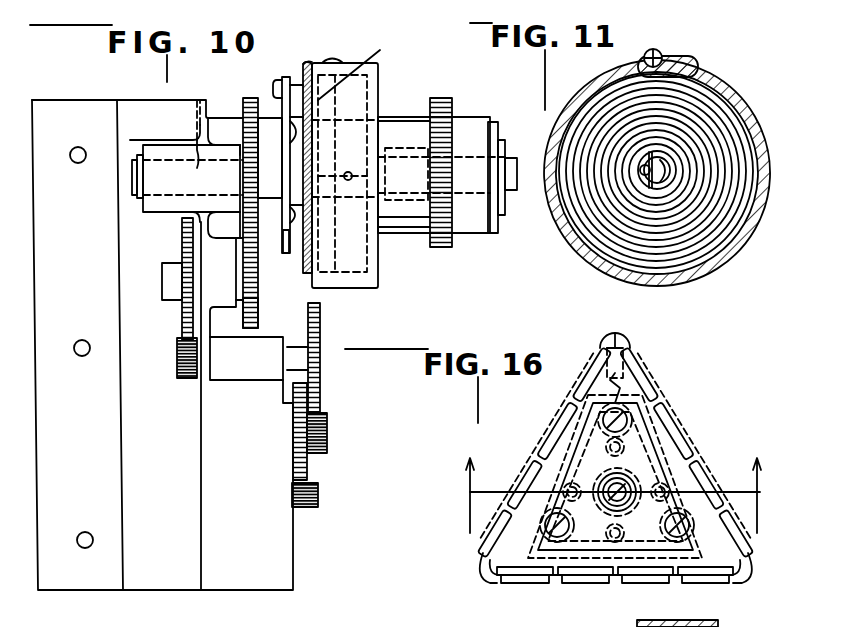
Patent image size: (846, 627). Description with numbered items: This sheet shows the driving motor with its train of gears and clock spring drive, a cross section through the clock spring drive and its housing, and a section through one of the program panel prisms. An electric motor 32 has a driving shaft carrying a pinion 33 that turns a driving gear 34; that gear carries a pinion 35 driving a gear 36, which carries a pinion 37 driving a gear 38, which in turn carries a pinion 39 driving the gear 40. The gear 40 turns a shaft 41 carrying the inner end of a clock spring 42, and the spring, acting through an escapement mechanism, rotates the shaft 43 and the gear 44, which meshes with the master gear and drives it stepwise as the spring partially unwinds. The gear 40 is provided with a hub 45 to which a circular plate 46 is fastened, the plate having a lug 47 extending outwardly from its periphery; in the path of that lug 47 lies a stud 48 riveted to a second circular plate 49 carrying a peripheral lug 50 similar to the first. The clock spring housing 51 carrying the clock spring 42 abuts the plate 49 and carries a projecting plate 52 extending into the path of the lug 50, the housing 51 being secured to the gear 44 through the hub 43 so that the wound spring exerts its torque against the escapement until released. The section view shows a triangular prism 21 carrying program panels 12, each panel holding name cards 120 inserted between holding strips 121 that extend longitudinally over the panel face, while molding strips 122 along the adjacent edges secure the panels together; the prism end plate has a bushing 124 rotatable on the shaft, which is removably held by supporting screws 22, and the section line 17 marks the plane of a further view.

In FIG. 16, the program panel 12 is at (588, 372).
In FIG. 16, the section line 17- 17 is at (619, 495).
In FIG. 16, the prism 21 is at (630, 392).
In FIG. 16, the supporting screw 22 is at (640, 482).
In FIG. 10, the electric motor 32 is at (241, 580).
In FIG. 10, the pinion 33 is at (318, 500).
In FIG. 10, the driving gear 34 is at (307, 466).
In FIG. 10, the pinion 35 is at (327, 426).
In FIG. 10, the gear 36 is at (320, 368).
In FIG. 10, the pinion 37 is at (177, 372).
In FIG. 10, the gear 38 is at (182, 322).
In FIG. 10, the pinion 39 is at (258, 316).
In FIG. 10, the gear 40 is at (243, 102).
In FIG. 10, the shaft 41 is at (511, 158).
In FIG. 11, the shaft 41 is at (672, 173).
In FIG. 10, the clock spring 42 is at (381, 263).
In FIG. 11, the clock spring 42 is at (714, 232).
In FIG. 10, the shaft 43 is at (396, 120).
In FIG. 10, the gear 44 is at (452, 104).
In FIG. 10, the hub 45 is at (268, 122).
In FIG. 10, the circular plate 46 is at (287, 254).
In FIG. 10, the lug 47 is at (284, 77).
In FIG. 10, the stud 48 is at (304, 60).
In FIG. 10, the second circular plate 49 is at (380, 58).
In FIG. 10, the peripheral lug 50 is at (302, 63).
In FIG. 10, the clock spring housing 51 is at (357, 287).
In FIG. 11, the clock spring housing 51 is at (736, 92).
In FIG. 10, the projecting plate 52 is at (337, 62).
In FIG. 11, the projecting plate 52 is at (647, 50).
In FIG. 16, the name card 120 is at (598, 358).
In FIG. 16, the holding strip 121 is at (573, 392).
In FIG. 16, the molding strip 122 is at (626, 337).
In FIG. 16, the bushing 124 is at (624, 480).